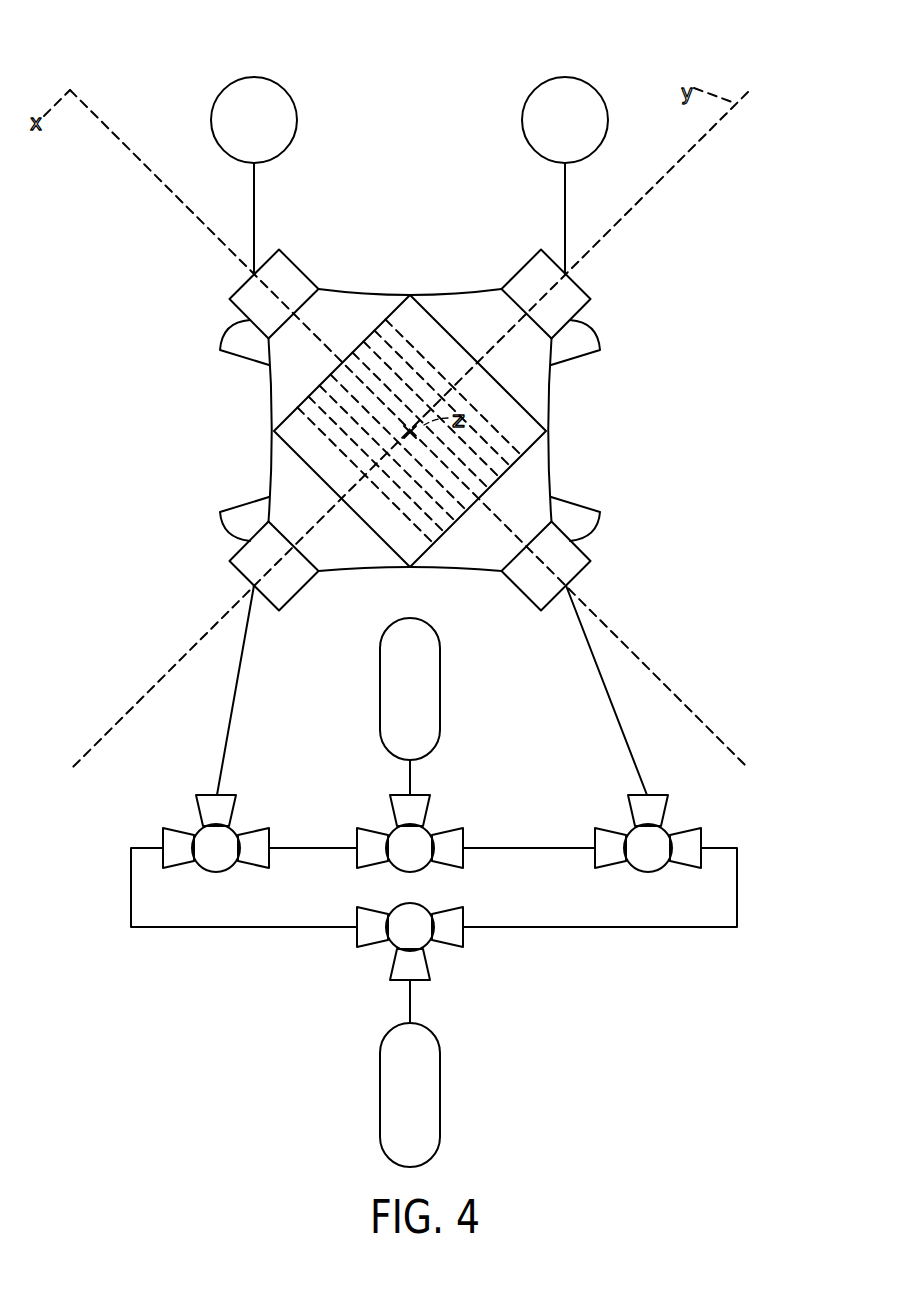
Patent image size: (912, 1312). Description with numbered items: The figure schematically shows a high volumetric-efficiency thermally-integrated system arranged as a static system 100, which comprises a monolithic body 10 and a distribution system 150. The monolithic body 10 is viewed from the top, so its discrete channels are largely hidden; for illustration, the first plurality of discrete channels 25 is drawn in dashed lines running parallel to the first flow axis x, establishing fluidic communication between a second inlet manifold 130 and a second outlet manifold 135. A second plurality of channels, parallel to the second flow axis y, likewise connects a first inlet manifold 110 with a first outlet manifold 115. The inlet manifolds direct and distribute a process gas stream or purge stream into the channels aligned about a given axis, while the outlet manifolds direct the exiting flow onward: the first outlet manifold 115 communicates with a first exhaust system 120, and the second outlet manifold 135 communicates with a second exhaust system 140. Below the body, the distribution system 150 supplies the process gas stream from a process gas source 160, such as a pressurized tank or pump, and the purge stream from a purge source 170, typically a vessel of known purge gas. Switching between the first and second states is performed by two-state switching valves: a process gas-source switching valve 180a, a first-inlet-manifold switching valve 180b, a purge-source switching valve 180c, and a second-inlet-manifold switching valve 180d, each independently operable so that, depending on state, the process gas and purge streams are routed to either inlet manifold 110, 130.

The static system 100 is at (128, 65).
The monolithic body 10 is at (408, 313).
The first plurality of discrete channels 25 is at (385, 320).
The first inlet manifold 110 is at (226, 519).
The first outlet manifold 115 is at (596, 342).
The first exhaust system 120 is at (522, 122).
The second inlet manifold 130 is at (595, 519).
The second outlet manifold 135 is at (226, 342).
The second exhaust system 140 is at (211, 122).
The distribution system 150 is at (474, 877).
The process gas source 160 is at (440, 1093).
The purge source 170 is at (440, 692).
The process gas-source switching valve 180a is at (391, 946).
The first-inlet-manifold switching valve 180b is at (199, 833).
The purge-source switching valve 180c is at (393, 833).
The second-inlet-manifold switching valve 180d is at (631, 833).